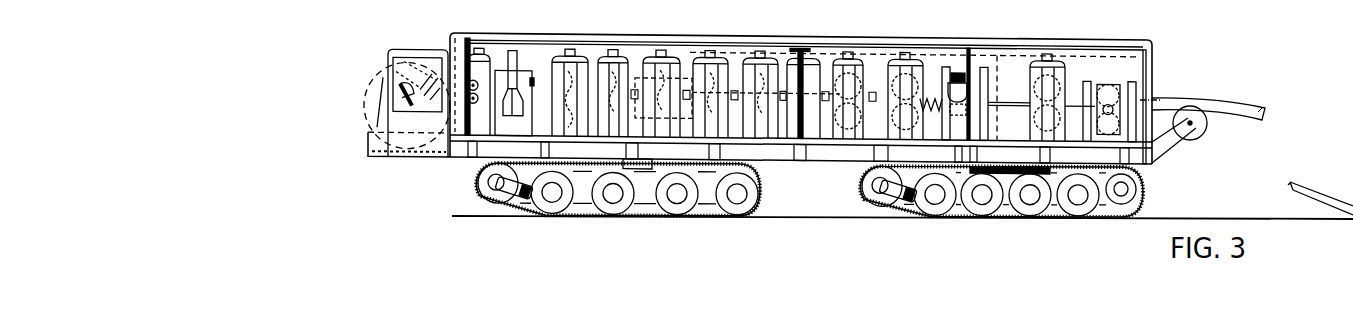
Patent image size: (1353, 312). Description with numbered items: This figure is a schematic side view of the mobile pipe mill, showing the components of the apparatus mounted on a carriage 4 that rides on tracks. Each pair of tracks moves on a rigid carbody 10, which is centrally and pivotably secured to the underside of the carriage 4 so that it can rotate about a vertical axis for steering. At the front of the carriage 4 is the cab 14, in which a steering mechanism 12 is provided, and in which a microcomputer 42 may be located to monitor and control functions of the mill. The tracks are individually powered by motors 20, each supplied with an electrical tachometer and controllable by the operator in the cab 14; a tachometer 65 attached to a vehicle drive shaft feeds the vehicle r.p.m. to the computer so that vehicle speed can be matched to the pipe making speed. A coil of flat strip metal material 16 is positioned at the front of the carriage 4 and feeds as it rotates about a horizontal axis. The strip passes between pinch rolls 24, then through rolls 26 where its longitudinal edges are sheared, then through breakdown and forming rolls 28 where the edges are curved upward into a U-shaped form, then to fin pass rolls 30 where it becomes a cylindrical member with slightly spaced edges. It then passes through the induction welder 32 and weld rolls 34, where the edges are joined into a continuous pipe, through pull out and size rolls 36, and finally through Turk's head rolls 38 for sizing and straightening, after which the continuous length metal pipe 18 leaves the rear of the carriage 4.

The carriage 4 is at (483, 147).
The carbody 10 is at (645, 205).
The steering mechanism 12 is at (405, 85).
The cab 14 is at (428, 53).
The coil of flat strip metal material 16 is at (383, 78).
The continuous length metal pipe 18 is at (1180, 94).
The motors 20 is at (521, 194).
The pinch rolls 24 is at (473, 88).
The rolls 26 is at (532, 80).
The breakdown and forming rolls 28 is at (793, 57).
The fin pass rolls 30 is at (890, 55).
The induction welder 32 is at (930, 92).
The weld rolls 34 is at (954, 65).
The pull out and size rolls 36 is at (1046, 53).
The Turk's head rolls 38 is at (1111, 77).
The microcomputer 42 is at (422, 143).
The tachometer 65 is at (488, 196).